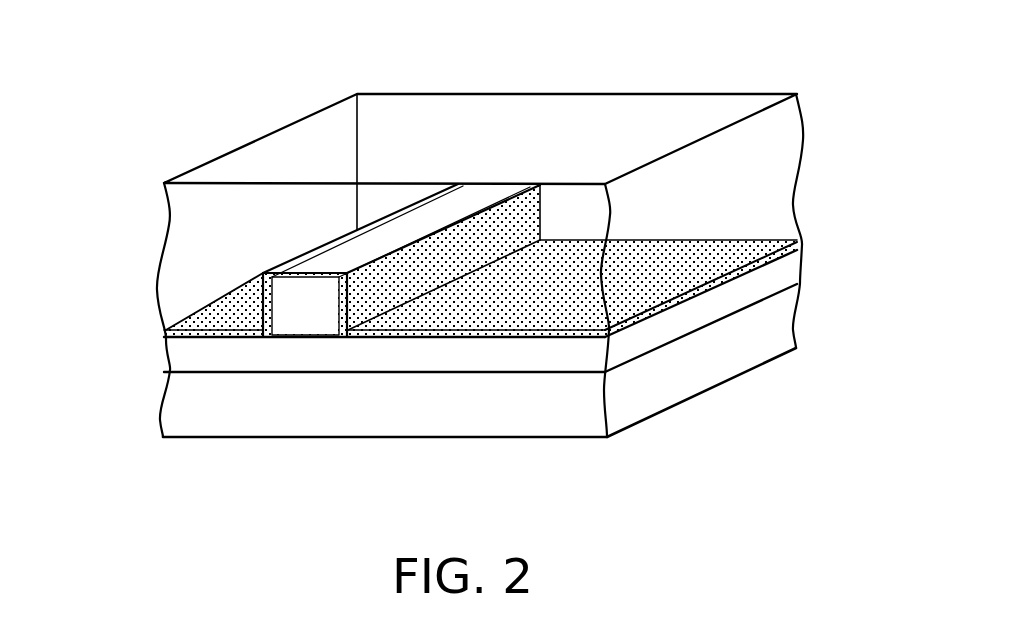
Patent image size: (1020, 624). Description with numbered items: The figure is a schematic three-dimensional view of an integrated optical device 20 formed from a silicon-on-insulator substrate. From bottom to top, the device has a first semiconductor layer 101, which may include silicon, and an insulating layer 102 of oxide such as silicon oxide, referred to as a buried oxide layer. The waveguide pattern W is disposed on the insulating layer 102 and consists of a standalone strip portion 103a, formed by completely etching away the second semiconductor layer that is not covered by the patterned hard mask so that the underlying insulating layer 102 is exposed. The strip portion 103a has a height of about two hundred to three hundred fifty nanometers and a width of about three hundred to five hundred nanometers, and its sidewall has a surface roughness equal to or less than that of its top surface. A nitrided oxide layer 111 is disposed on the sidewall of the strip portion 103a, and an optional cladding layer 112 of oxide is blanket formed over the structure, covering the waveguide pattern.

The integrated optical device 20 is at (462, 223).
The first semiconductor layer 101 is at (780, 330).
The insulating layer 102 is at (782, 280).
The nitrided oxide layer 111 is at (798, 242).
The cladding layer 112 is at (776, 153).
The strip portion 103a is at (283, 299).